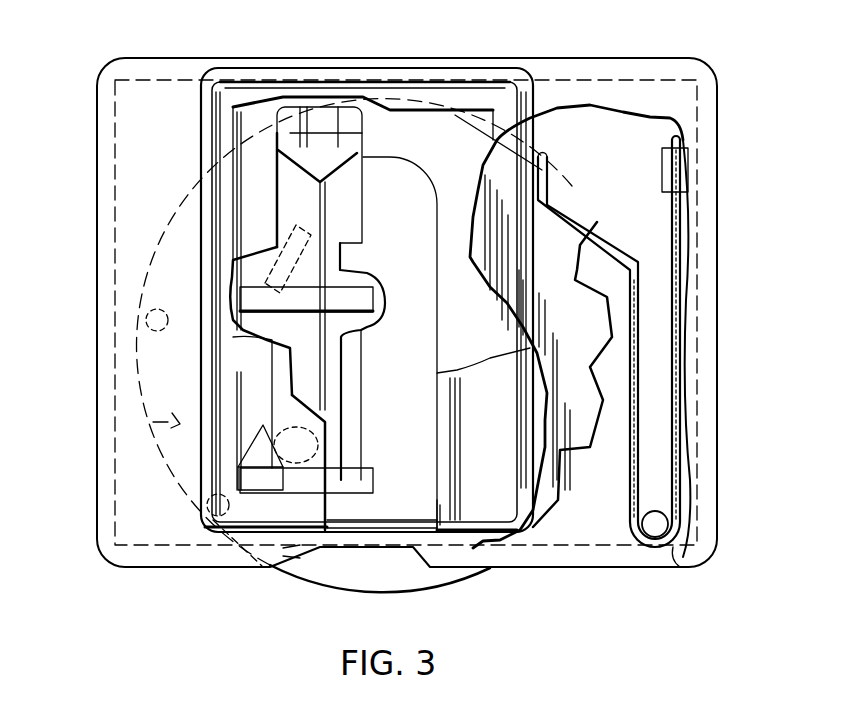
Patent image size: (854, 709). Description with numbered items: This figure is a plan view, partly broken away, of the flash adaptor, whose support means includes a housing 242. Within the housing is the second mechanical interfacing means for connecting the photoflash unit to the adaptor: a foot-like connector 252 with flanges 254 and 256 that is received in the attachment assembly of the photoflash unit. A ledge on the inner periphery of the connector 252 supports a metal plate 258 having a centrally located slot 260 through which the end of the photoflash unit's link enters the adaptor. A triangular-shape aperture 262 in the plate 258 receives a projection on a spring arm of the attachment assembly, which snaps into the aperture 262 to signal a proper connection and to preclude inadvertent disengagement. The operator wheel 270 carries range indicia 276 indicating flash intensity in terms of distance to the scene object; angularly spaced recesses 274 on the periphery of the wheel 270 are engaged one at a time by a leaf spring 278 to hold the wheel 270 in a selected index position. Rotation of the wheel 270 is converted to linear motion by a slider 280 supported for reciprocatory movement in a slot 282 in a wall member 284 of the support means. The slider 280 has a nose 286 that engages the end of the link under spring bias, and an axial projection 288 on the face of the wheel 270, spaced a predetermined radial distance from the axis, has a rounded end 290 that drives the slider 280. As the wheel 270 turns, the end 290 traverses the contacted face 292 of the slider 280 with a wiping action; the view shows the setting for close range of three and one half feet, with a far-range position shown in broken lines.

The housing 242 is at (660, 62).
The foot-like connector 252 is at (252, 68).
The flange 254 is at (535, 106).
The flange 256 is at (203, 393).
The metal plate 258 is at (505, 432).
The slot 260 is at (433, 500).
The triangular-shape aperture 262 is at (250, 440).
The wheel 270 is at (563, 256).
The recesses 274 is at (558, 462).
The range indicia 276 is at (352, 575).
The leaf spring 278 is at (628, 497).
The slider 280 is at (347, 188).
The slot 282 is at (295, 381).
The wall member 284 is at (410, 242).
The nose 286 is at (318, 181).
The axial projection 288 is at (282, 262).
The rounded end 290 is at (305, 243).
The contacted face 292 is at (229, 290).